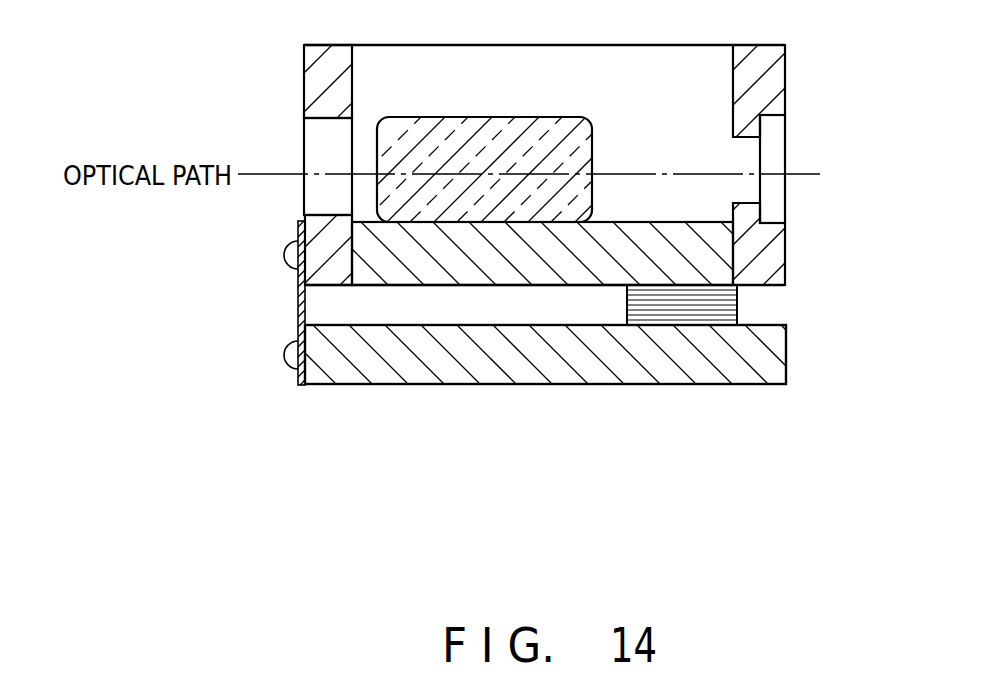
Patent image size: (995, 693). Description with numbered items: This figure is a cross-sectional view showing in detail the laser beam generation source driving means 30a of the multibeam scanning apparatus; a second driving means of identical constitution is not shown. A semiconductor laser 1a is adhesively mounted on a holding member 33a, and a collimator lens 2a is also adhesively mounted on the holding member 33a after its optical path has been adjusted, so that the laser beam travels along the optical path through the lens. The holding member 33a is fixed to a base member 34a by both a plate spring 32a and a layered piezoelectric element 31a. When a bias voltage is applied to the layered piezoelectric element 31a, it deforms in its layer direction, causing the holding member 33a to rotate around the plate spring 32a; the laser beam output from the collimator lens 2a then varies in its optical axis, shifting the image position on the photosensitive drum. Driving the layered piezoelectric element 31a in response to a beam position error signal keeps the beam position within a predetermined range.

The laser beam generation source driving means 30a is at (798, 363).
The holding member 33a is at (313, 92).
The collimator lens 2a is at (500, 143).
The semiconductor laser 1a is at (738, 166).
The plate spring 32a is at (299, 304).
The layered piezoelectric element 31a is at (700, 314).
The base member 34a is at (488, 368).